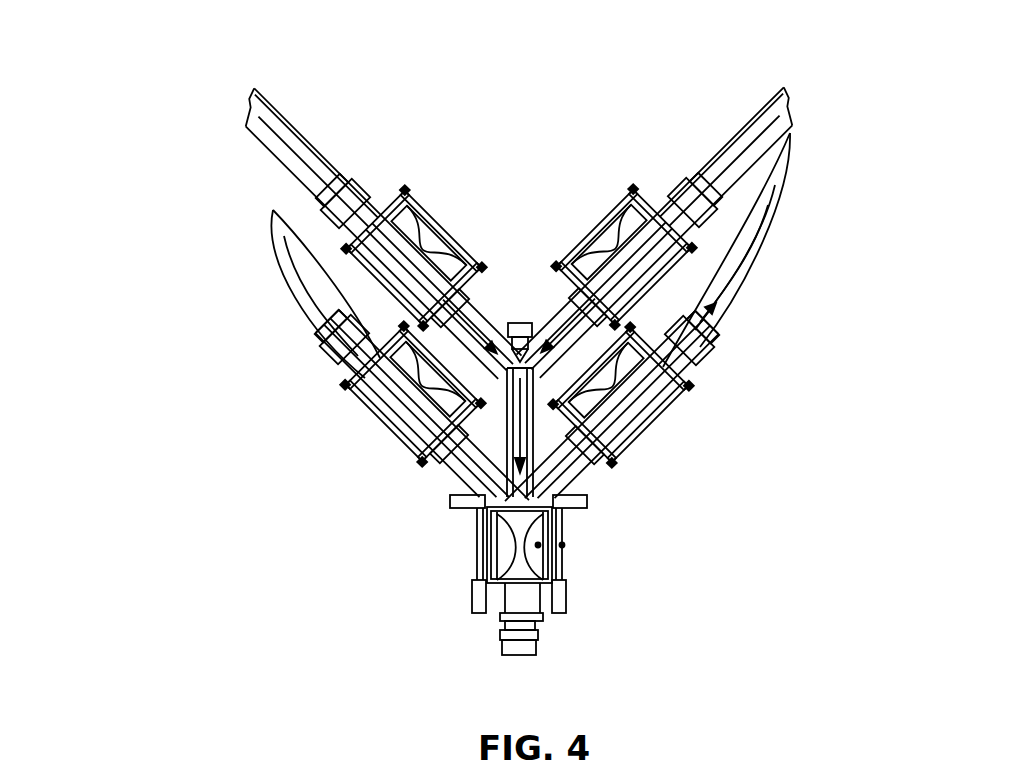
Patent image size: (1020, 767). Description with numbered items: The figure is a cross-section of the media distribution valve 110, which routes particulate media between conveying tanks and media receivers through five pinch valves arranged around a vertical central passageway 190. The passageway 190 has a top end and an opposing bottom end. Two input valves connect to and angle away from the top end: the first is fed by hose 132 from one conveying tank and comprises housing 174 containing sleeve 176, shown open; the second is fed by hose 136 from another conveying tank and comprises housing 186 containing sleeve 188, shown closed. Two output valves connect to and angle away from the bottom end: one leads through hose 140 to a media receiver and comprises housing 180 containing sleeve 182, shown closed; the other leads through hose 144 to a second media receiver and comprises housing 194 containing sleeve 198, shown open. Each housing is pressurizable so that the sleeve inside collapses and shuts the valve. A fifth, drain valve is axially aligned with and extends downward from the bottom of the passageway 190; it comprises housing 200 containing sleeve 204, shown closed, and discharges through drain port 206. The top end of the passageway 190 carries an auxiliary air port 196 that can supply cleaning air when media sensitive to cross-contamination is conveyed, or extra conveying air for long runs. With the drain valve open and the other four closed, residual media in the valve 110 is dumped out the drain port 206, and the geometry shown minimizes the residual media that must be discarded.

The media distribution valve 110 is at (197, 154).
The hose 132 is at (307, 138).
The hose 136 is at (743, 130).
The hose 140 is at (290, 262).
The hose 144 is at (788, 195).
The housing 174 is at (430, 240).
The sleeve 176 is at (440, 276).
The housing 186 is at (592, 216).
The sleeve 188 is at (583, 238).
The housing 180 is at (380, 435).
The sleeve 182 is at (413, 440).
The vertical central passageway 190 is at (540, 428).
The housing 194 is at (645, 418).
The sleeve 198 is at (655, 412).
The auxiliary air port 196 is at (520, 322).
The housing 200 is at (497, 547).
The sleeve 204 is at (533, 565).
The drain port 206 is at (535, 655).